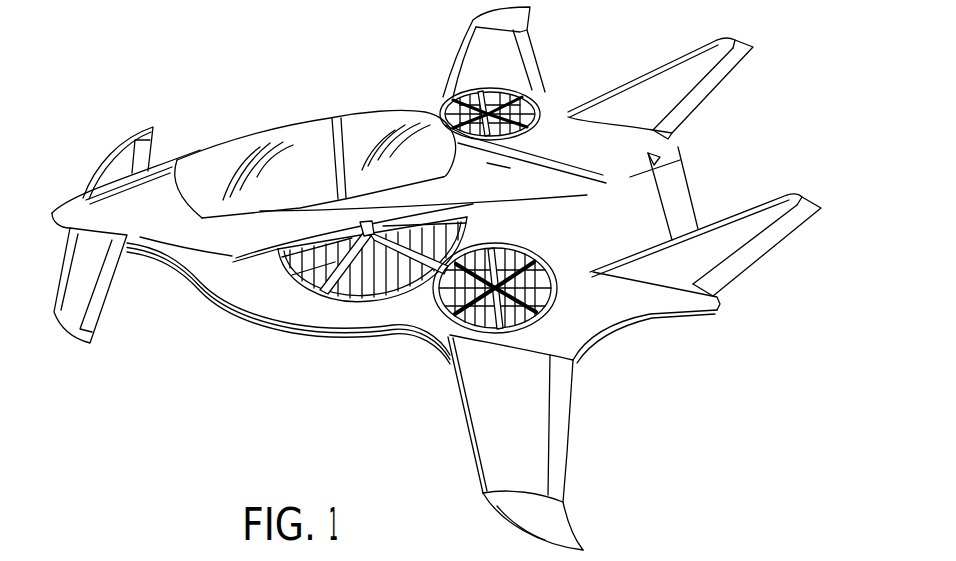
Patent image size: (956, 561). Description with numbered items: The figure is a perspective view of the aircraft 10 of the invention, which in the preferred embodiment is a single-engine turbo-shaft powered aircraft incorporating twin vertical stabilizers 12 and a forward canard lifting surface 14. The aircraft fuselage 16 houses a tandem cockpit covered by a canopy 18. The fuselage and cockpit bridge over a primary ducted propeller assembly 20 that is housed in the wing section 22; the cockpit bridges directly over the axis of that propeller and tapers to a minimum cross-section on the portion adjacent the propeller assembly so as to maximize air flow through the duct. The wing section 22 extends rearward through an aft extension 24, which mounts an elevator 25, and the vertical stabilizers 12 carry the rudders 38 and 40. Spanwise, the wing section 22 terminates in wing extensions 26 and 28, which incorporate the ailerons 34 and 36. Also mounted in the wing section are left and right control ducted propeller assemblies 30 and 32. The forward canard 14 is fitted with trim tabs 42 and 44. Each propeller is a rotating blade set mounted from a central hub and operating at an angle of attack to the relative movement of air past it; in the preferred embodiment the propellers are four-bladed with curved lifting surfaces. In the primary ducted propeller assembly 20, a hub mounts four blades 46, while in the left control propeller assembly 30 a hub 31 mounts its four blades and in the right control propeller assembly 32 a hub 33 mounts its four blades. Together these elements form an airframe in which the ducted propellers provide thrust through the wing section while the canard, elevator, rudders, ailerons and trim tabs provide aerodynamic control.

The aircraft 10 is at (291, 102).
The vertical stabilizers 12 is at (673, 70).
The forward canard lifting surface 14 is at (107, 167).
The fuselage 16 is at (180, 252).
The canopy 18 is at (242, 140).
The primary ducted propeller assembly 20 is at (353, 292).
The wing section 22 is at (242, 298).
The aft extension 24 is at (668, 148).
The elevator 25 is at (677, 208).
The wing extension 26 is at (480, 428).
The wing extension 28 is at (451, 55).
The left control ducted propeller assembly 30 is at (501, 311).
The hub 31 is at (557, 288).
The right control ducted propeller assembly 32 is at (520, 107).
The hub 33 is at (523, 127).
The aileron 34 is at (563, 430).
The aileron 36 is at (528, 62).
The rudder 38 is at (768, 245).
The rudder 40 is at (732, 68).
The trim tab 42 is at (98, 300).
The trim tab 44 is at (143, 160).
The blades 46 is at (312, 287).